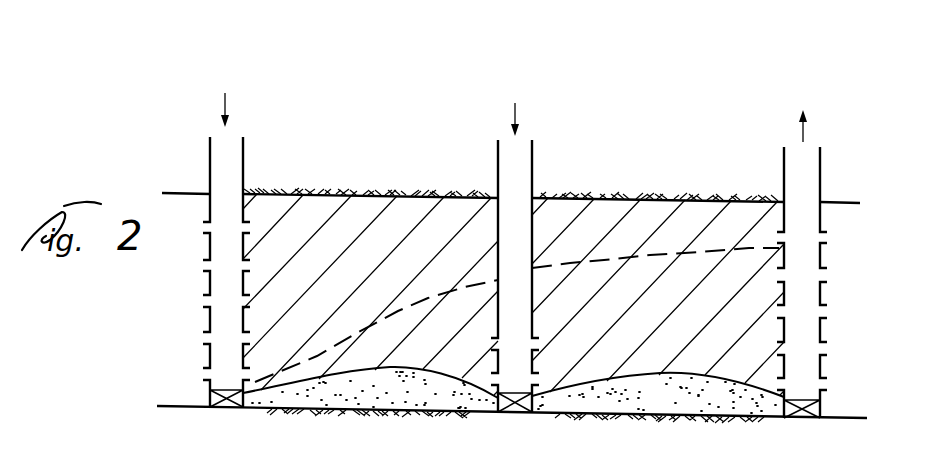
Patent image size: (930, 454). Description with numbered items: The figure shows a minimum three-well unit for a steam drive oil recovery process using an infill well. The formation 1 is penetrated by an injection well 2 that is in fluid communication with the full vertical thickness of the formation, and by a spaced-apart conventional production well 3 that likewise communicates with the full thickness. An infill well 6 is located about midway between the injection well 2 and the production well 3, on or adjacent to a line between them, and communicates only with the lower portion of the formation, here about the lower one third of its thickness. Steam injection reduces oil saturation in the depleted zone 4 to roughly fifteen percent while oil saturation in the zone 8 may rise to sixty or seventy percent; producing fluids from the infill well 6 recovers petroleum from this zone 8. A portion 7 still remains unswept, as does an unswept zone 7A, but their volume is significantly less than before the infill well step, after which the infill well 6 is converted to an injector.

The formation 1 is at (166, 347).
The injection well 2 is at (243, 160).
The production well 3 is at (784, 175).
The depleted zone 4 is at (350, 263).
The infill well 6 is at (532, 160).
The unswept portion 7 is at (395, 401).
The unswept zone 7A is at (690, 405).
The zone 8 is at (452, 343).